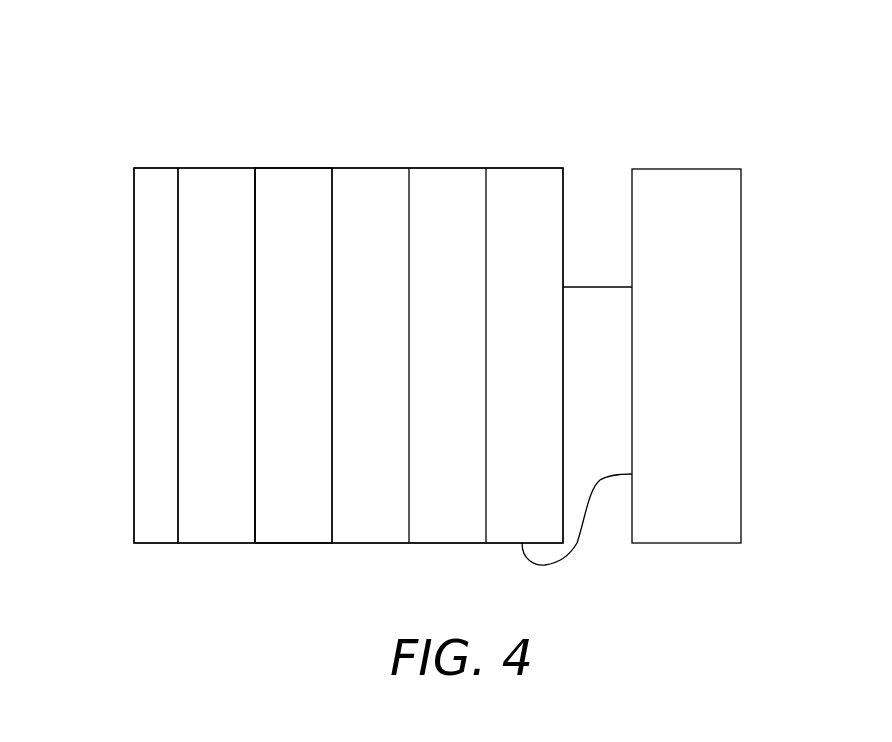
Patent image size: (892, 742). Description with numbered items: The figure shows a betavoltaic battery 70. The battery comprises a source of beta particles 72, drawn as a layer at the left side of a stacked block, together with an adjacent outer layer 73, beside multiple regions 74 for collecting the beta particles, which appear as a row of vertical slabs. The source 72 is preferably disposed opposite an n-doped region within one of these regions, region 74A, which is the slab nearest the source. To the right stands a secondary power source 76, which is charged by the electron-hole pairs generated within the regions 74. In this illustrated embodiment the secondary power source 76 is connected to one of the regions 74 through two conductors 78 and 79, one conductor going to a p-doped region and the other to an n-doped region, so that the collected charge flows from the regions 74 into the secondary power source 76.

The betavoltaic battery 70 is at (128, 98).
The source of beta particles 72 is at (186, 361).
The outer layer 73 is at (157, 435).
The regions for collecting the beta particles 74 is at (563, 159).
The region 74A is at (267, 191).
The secondary power source 76 is at (687, 168).
The conductor 78 is at (598, 287).
The conductor 79 is at (573, 552).